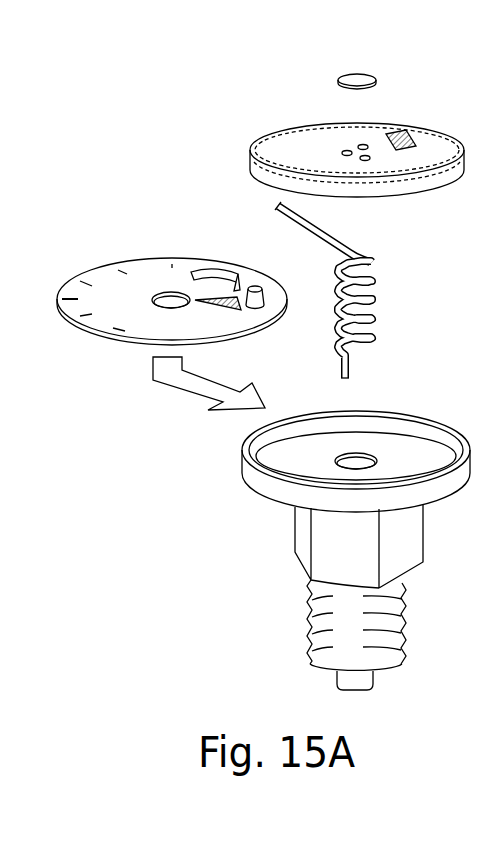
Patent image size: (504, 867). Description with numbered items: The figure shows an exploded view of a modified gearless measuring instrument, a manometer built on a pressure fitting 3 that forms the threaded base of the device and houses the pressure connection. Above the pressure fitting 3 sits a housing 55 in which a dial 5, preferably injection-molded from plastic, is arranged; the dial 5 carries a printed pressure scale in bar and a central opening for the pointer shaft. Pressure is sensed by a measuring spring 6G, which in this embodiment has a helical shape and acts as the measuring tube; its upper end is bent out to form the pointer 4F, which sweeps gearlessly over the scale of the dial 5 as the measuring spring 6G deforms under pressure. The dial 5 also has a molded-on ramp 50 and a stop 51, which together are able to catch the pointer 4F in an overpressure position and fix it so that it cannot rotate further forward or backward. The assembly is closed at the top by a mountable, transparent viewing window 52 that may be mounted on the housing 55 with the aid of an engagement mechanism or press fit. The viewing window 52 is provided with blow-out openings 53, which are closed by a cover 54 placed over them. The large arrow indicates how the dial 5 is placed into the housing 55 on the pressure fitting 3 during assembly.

The pressure fitting 3 is at (305, 669).
The dial 5 is at (172, 304).
The ramp 50 is at (215, 273).
The stop 51 is at (255, 286).
The viewing window 52 is at (288, 138).
The blow-out openings 53 is at (364, 145).
The cover 54 is at (338, 77).
The housing 55 is at (490, 334).
The pointer 4F is at (333, 233).
The measuring spring 6G is at (373, 290).